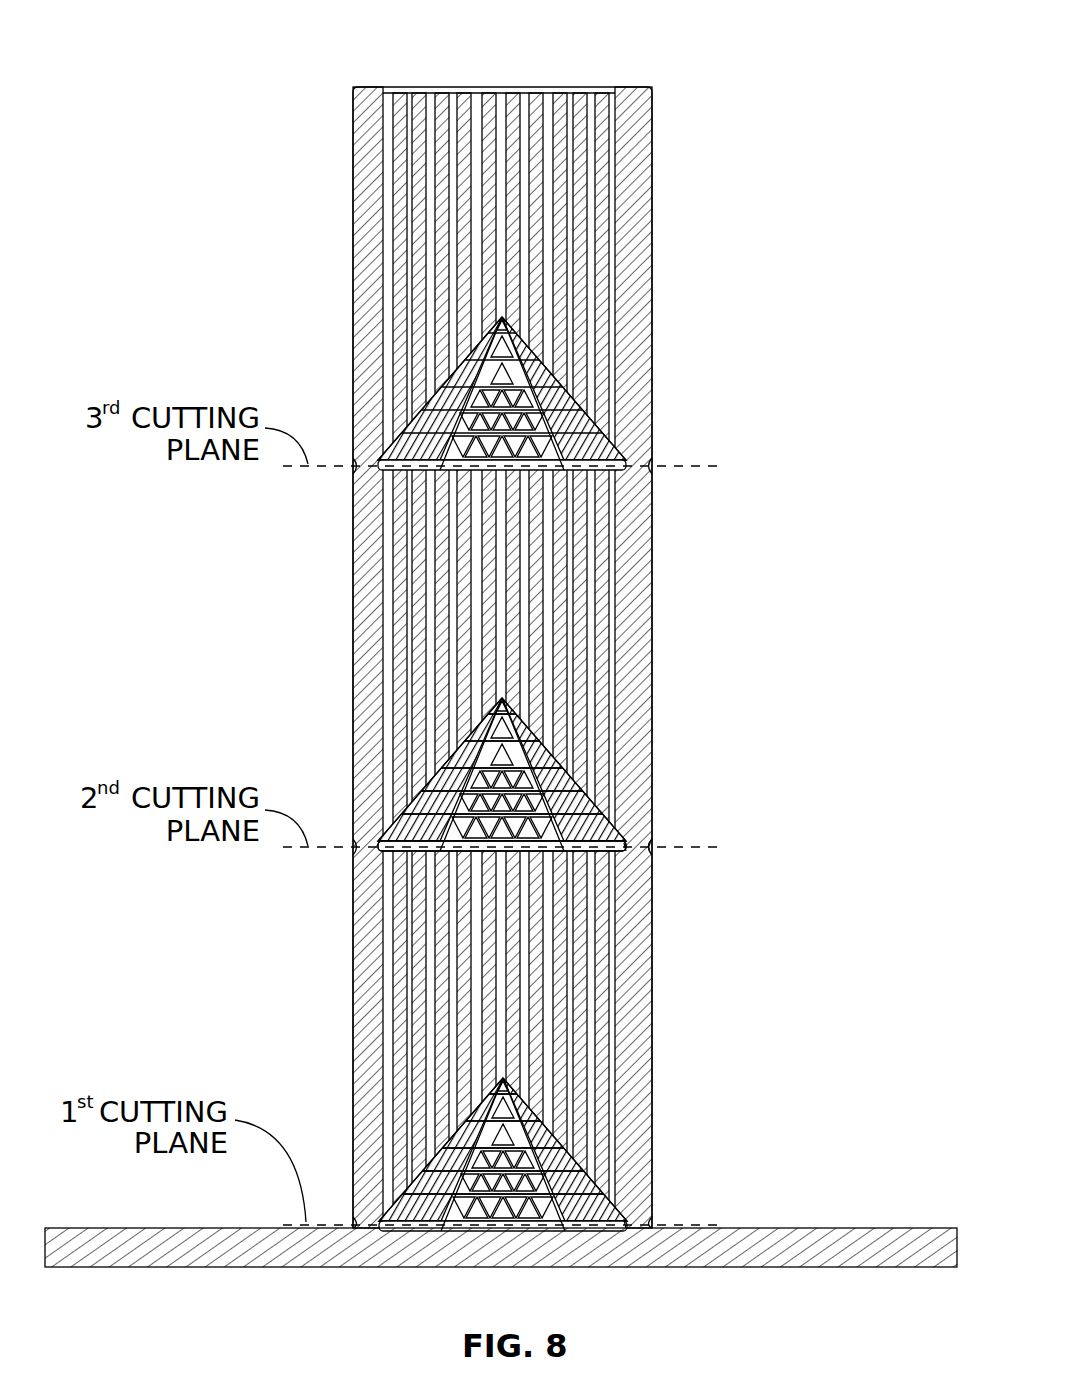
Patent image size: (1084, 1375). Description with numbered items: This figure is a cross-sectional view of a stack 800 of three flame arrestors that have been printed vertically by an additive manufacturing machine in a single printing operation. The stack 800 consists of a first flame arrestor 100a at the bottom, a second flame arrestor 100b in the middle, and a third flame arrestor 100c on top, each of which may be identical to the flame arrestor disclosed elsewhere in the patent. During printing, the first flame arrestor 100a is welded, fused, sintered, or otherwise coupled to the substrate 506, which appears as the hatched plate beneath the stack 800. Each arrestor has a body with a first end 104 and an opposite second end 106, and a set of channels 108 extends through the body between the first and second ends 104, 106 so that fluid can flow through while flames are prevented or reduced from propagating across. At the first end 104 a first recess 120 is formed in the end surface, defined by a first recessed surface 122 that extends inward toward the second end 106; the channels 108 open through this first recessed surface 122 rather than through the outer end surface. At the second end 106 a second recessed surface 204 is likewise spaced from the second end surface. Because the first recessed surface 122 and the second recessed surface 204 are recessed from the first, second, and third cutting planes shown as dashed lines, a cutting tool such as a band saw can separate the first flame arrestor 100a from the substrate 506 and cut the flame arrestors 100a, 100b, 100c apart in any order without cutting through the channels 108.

The stack 800 is at (170, 42).
The third flame arrestor 100c is at (288, 225).
The second flame arrestor 100b is at (305, 600).
The first flame arrestor 100a is at (305, 980).
The channels 108 is at (613, 640).
The first recess 120 is at (565, 770).
The first recessed surface 122 is at (480, 747).
The second end 106 is at (637, 838).
The first end 104 is at (633, 858).
The second recessed surface 204 is at (405, 862).
The substrate 506 is at (150, 1245).